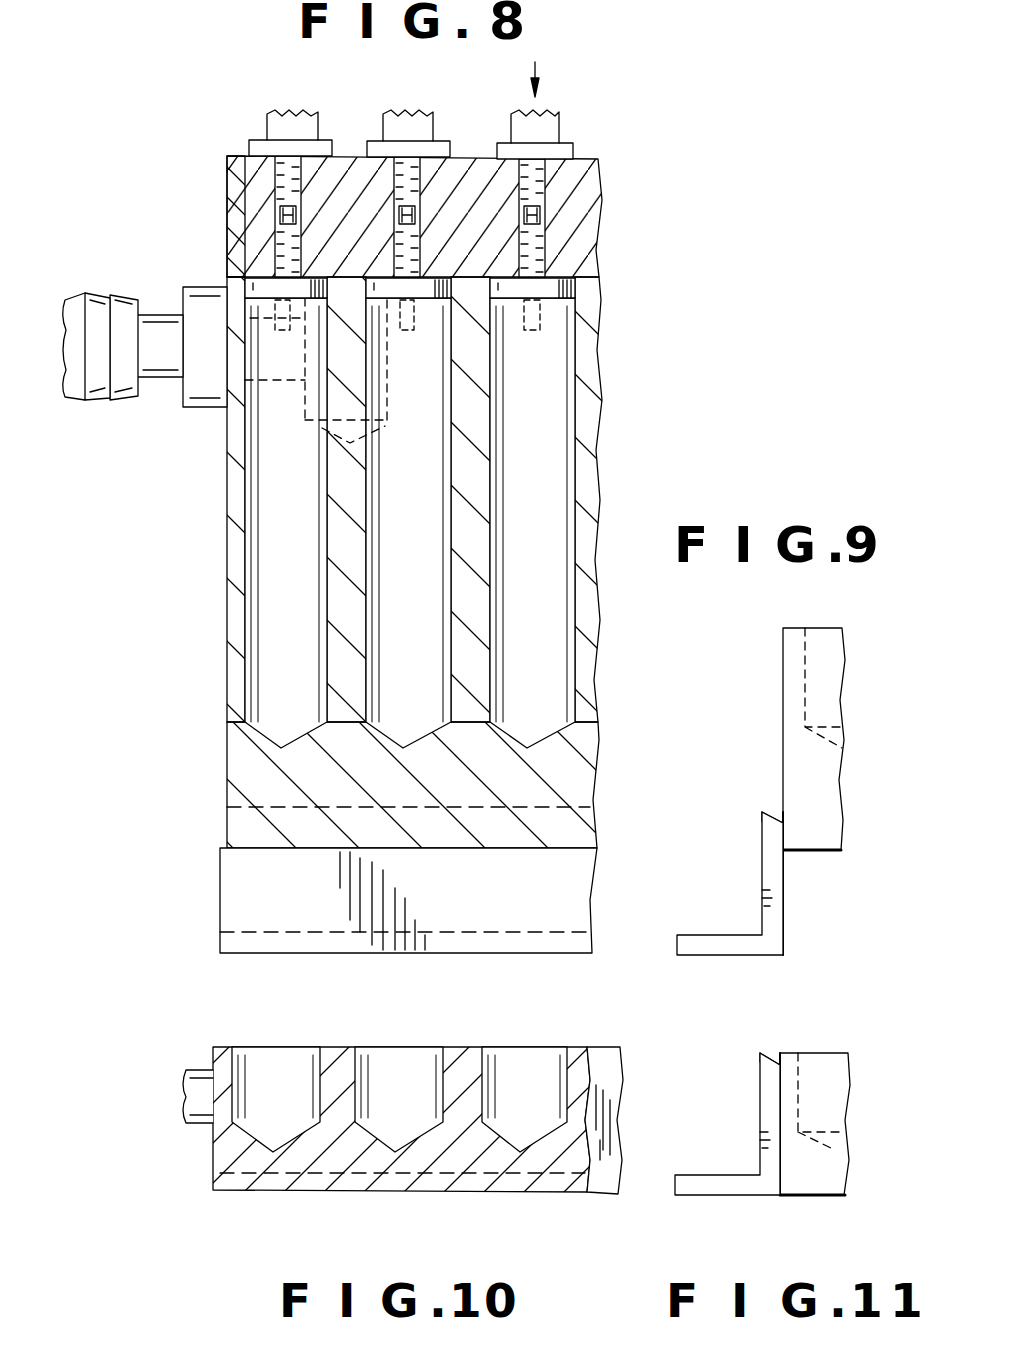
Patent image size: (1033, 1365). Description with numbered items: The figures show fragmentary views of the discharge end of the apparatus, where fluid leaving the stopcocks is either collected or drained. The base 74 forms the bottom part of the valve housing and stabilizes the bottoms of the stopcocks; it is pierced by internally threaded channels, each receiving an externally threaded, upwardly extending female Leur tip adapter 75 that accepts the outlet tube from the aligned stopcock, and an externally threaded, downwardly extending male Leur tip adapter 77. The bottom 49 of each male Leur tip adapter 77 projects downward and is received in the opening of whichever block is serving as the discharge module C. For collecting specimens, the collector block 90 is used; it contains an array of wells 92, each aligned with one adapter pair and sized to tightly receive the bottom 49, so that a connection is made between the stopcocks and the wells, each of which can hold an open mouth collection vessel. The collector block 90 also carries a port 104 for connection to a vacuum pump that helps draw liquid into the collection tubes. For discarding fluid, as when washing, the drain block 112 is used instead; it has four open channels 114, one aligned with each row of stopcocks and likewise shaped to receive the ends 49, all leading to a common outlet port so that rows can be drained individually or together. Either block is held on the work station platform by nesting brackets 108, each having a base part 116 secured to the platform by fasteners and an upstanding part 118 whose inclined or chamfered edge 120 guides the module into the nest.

In FIG. 8, the discharge module C is at (210, 510).
In FIG. 10, the discharge module C is at (208, 1166).
In FIG. 8, the bottom of male Leur tip adapter 49 is at (262, 290).
In FIG. 8, the base 74 is at (567, 220).
In FIG. 8, the female Leur tip adapter 75 is at (326, 188).
In FIG. 8, the male Leur tip adapter 77 is at (272, 246).
In FIG. 8, the collector block 90 is at (248, 762).
In FIG. 9, the collector block 90 is at (824, 704).
In FIG. 8, the well 92 is at (545, 352).
In FIG. 8, the port 104 is at (100, 292).
In FIG. 8, the nesting bracket 108 is at (258, 882).
In FIG. 9, the nesting bracket 108 is at (790, 924).
In FIG. 10, the nesting bracket 108 is at (606, 1088).
In FIG. 11, the nesting bracket 108 is at (755, 1095).
In FIG. 10, the drain block 112 is at (333, 1148).
In FIG. 10, the open channel 114 is at (521, 1078).
In FIG. 11, the open channel 114 is at (838, 1101).
In FIG. 9, the base part 116 is at (770, 955).
In FIG. 11, the base part 116 is at (730, 1180).
In FIG. 9, the upstanding part 118 is at (786, 874).
In FIG. 11, the upstanding part 118 is at (784, 1176).
In FIG. 9, the chamfered edge 120 is at (778, 820).
In FIG. 11, the chamfered edge 120 is at (787, 1050).